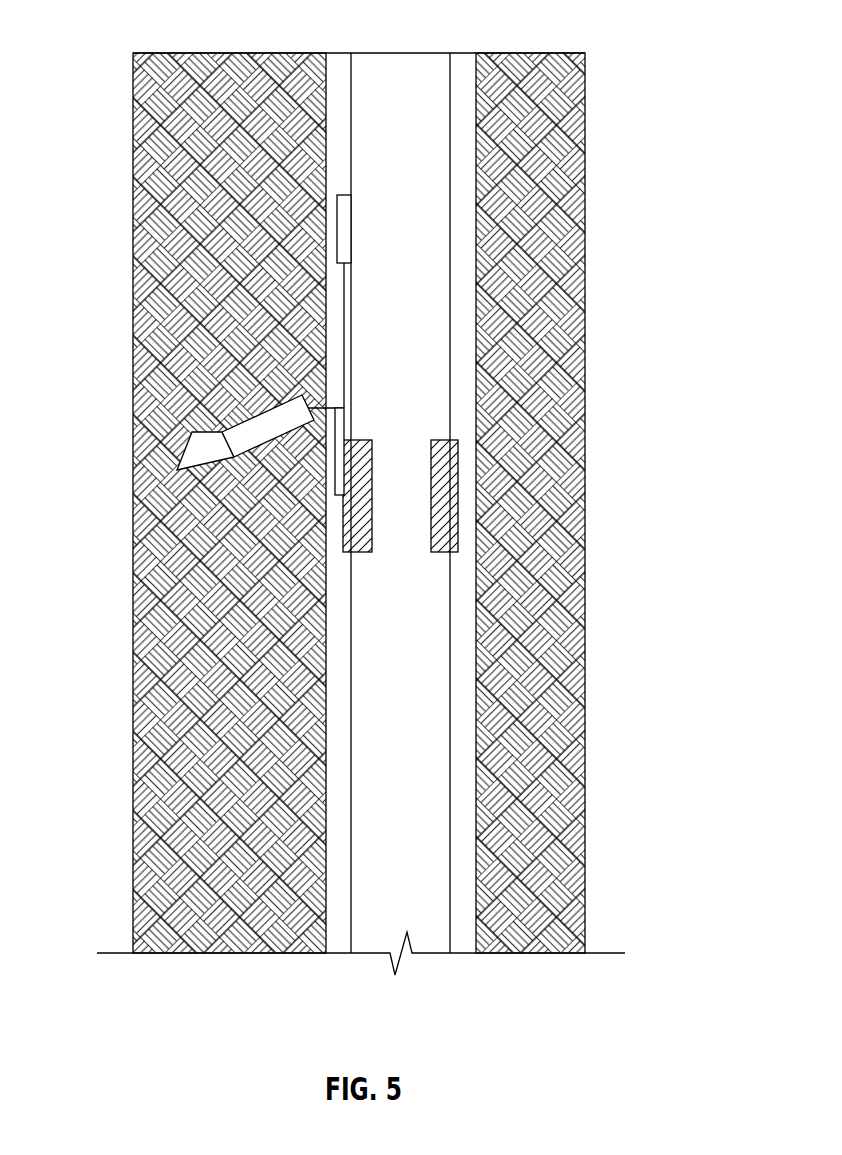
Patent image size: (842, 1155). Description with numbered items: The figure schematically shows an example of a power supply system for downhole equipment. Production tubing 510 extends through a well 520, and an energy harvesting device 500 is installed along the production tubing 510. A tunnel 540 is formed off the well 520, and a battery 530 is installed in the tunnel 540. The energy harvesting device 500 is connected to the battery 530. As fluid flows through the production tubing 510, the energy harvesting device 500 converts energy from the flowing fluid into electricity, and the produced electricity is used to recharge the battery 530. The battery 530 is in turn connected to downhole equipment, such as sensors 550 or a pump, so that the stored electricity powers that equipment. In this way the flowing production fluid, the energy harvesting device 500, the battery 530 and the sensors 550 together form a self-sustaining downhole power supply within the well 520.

The energy harvesting device 500 is at (345, 518).
The production tubing 510 is at (452, 292).
The well 520 is at (415, 33).
The battery 530 is at (273, 418).
The tunnel 540 is at (192, 432).
The sensors 550 is at (337, 233).